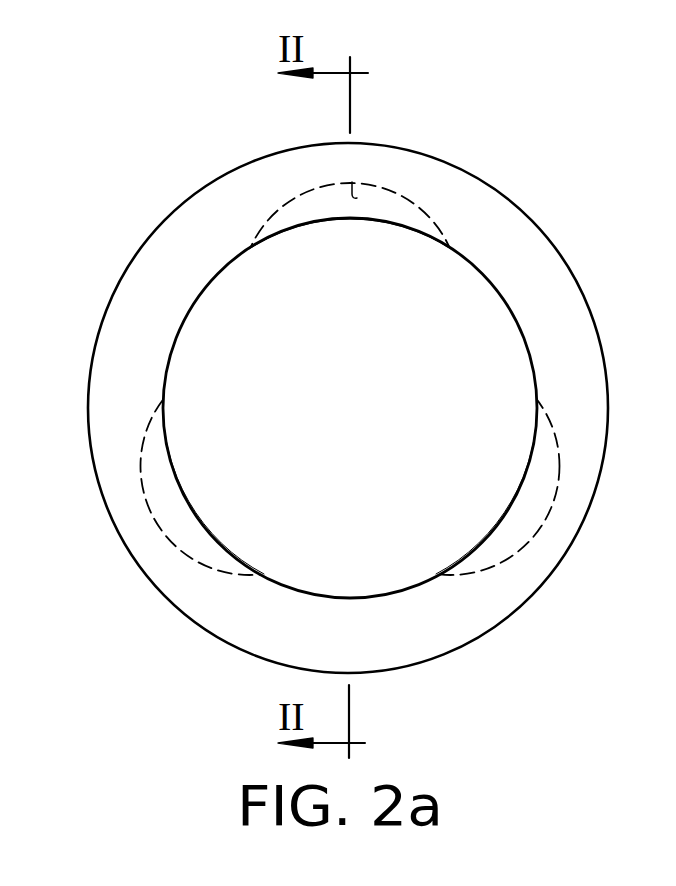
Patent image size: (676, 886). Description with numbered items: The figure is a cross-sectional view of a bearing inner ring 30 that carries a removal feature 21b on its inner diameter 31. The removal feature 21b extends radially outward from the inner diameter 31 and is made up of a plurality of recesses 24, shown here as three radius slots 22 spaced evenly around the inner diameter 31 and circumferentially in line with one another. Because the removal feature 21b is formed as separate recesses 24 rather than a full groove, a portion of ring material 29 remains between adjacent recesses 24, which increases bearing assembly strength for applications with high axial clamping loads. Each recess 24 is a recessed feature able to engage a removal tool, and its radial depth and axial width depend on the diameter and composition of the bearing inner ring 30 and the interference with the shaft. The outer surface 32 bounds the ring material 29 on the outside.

The removal feature 21b is at (340, 228).
The radius slot 22 is at (175, 485).
The recess 24 is at (363, 202).
The ring material 29 is at (354, 408).
The bearing inner ring 30 is at (177, 289).
The inner diameter 31 is at (192, 312).
The outer surface 32 is at (178, 213).